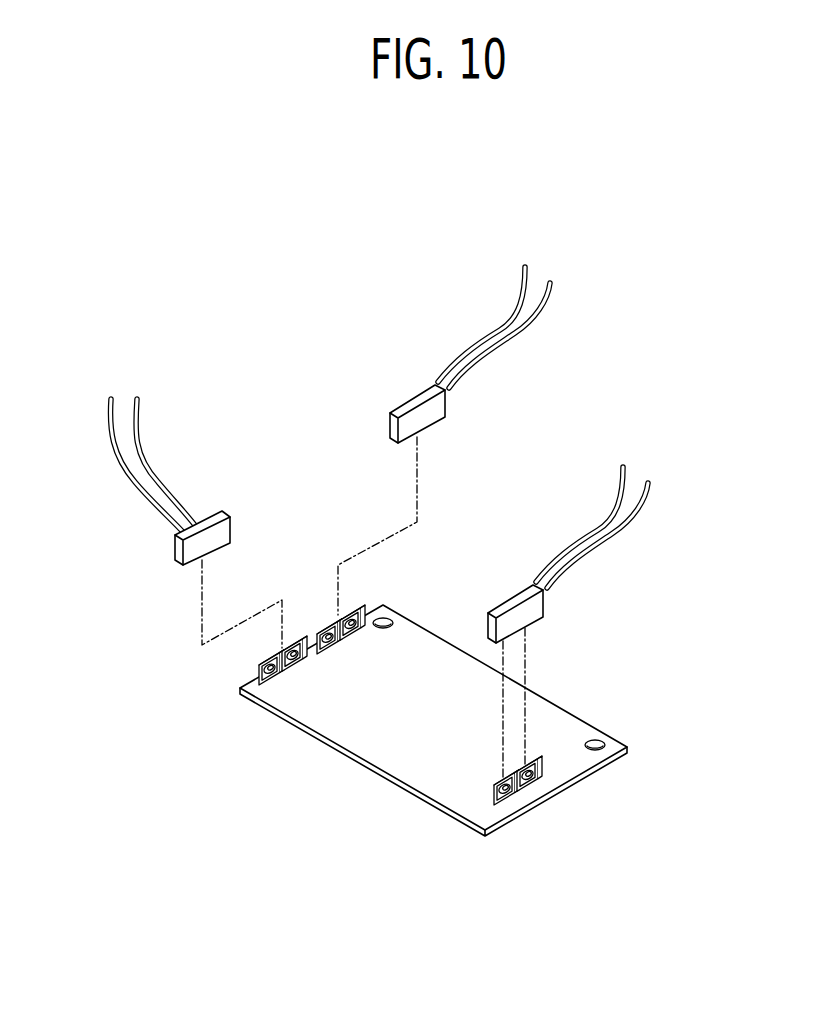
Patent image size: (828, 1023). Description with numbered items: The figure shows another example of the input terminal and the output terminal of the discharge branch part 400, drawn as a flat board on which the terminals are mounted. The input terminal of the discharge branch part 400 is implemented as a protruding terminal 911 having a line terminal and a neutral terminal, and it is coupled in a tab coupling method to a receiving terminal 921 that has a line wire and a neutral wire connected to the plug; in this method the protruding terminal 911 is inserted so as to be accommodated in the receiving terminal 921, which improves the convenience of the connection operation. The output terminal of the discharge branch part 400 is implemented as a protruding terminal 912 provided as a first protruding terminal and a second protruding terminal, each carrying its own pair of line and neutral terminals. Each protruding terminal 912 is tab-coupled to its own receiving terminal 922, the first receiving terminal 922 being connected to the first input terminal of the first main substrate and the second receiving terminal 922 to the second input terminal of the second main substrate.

The discharge branch part 400 is at (360, 763).
The protruding terminal 911 is at (535, 790).
The protruding terminal 912 is at (330, 635).
The receiving terminal 921 is at (543, 613).
The receiving terminal 922 is at (222, 509).